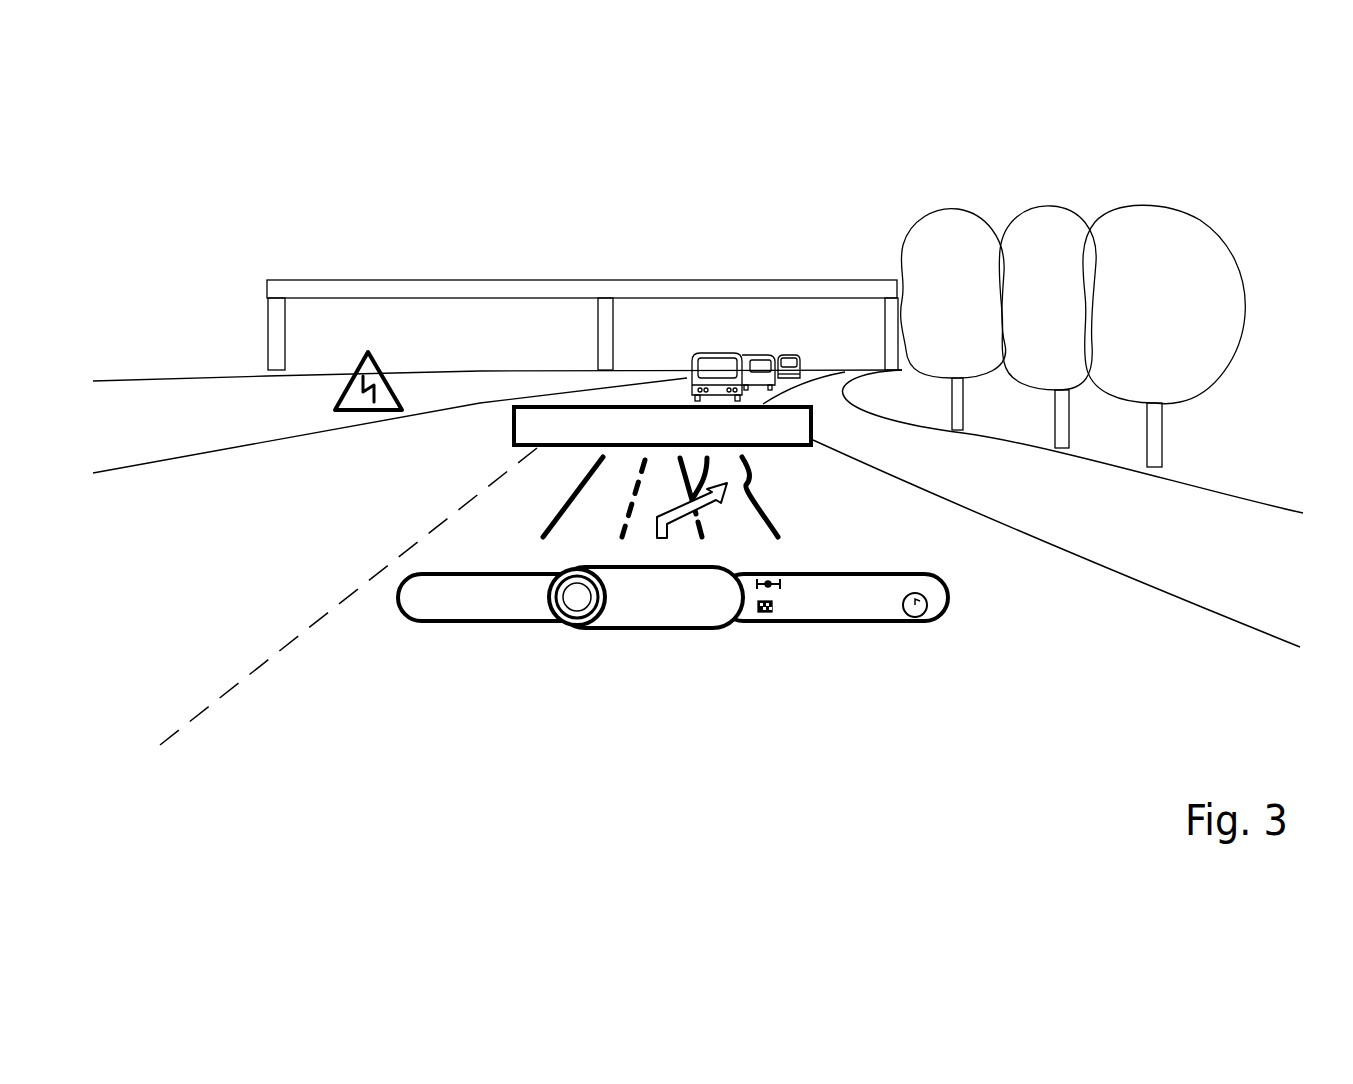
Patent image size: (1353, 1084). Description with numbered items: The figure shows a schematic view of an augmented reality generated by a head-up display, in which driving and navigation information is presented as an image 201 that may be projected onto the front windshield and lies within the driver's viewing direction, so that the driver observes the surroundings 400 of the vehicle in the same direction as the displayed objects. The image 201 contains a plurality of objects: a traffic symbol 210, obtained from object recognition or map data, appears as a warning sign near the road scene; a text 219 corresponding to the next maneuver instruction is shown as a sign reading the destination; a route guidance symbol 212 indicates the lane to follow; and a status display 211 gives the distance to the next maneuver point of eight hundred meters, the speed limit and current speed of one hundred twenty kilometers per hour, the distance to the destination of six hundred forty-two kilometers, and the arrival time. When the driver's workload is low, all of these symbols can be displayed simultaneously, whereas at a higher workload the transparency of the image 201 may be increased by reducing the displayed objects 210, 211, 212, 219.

The image 201 is at (286, 494).
The traffic symbol 210 is at (358, 365).
The text 219 is at (512, 427).
The route guidance symbol 212 is at (762, 500).
The status display 211 is at (950, 597).
The surroundings 400 is at (1072, 316).